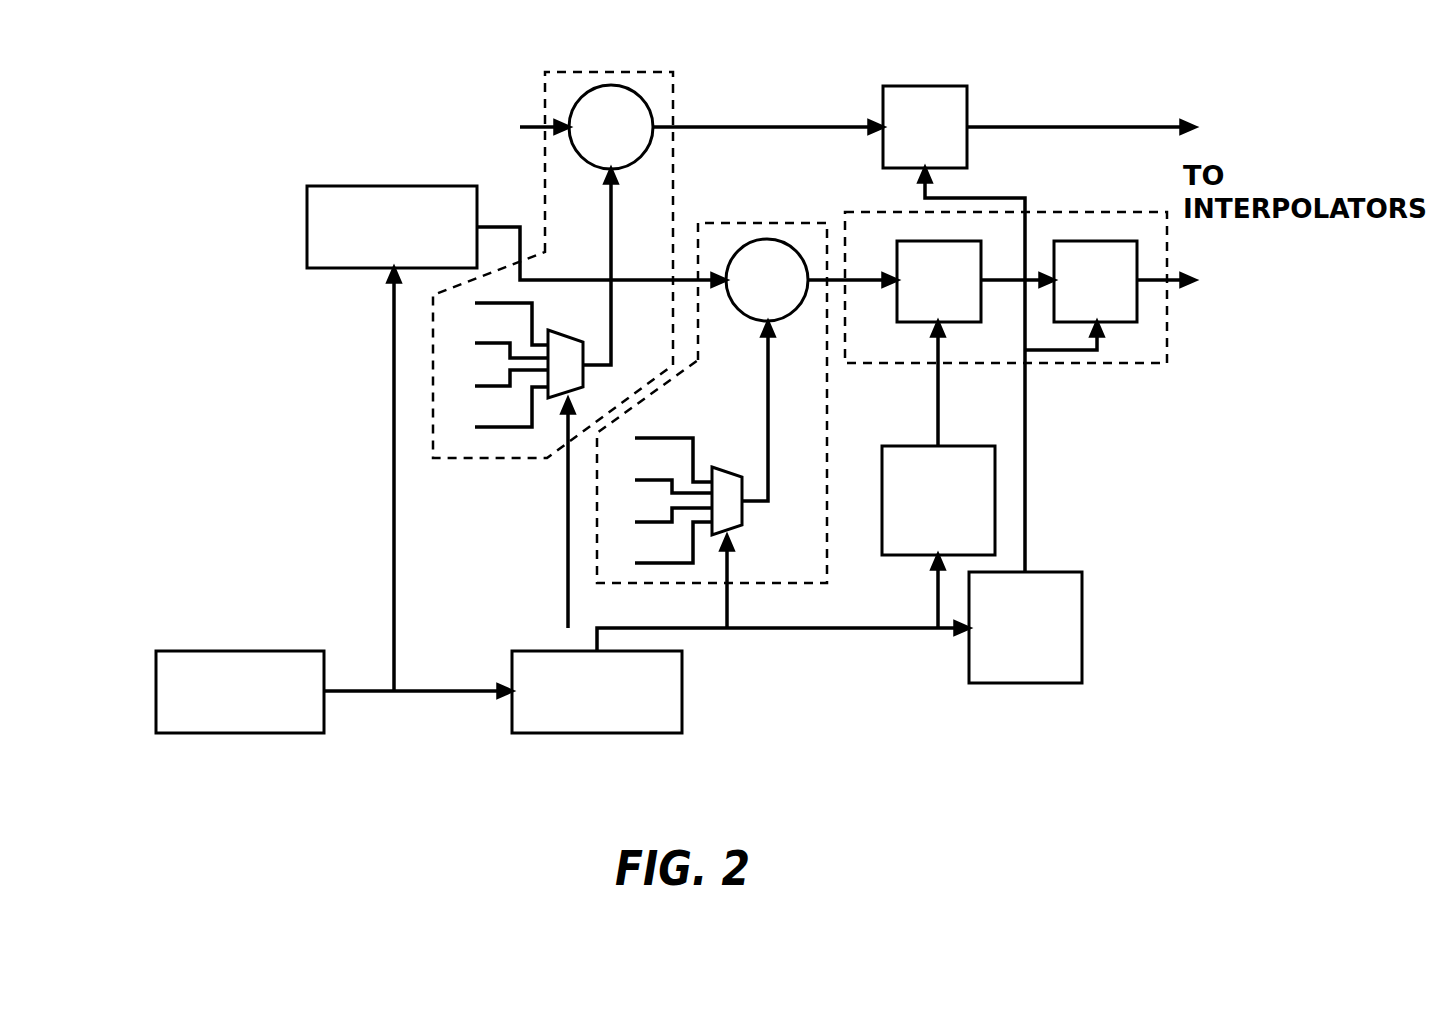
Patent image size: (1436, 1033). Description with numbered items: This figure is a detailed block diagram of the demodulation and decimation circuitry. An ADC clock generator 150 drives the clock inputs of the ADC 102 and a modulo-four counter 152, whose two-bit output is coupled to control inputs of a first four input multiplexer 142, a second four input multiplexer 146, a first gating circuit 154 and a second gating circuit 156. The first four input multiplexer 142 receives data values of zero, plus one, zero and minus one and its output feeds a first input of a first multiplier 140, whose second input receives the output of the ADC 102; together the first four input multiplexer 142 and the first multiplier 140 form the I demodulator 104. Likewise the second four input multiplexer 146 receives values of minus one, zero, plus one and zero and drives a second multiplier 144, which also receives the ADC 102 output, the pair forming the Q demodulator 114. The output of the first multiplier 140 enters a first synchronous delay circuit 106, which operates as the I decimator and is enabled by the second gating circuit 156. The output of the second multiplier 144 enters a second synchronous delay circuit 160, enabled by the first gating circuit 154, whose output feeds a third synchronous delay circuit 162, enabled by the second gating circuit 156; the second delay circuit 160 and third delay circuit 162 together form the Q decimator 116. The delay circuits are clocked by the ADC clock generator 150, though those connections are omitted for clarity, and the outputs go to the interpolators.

The ADC 102 is at (345, 186).
The I demodulator 104 is at (618, 72).
The first synchronous delay circuit 106 is at (925, 86).
The Q demodulator 114 is at (773, 223).
The Q decimator 116 is at (1090, 212).
The first multiplier 140 is at (598, 169).
The first four input multiplexer 142 is at (566, 330).
The second multiplier 144 is at (745, 321).
The second four input multiplexer 146 is at (727, 467).
The ADC clock generator 150 is at (238, 651).
The modulo-4 counter 152 is at (553, 651).
The first gating circuit 154 is at (910, 446).
The second gating circuit 156 is at (1050, 572).
The second synchronous delay circuit 160 is at (917, 322).
The third synchronous delay circuit 162 is at (1117, 322).